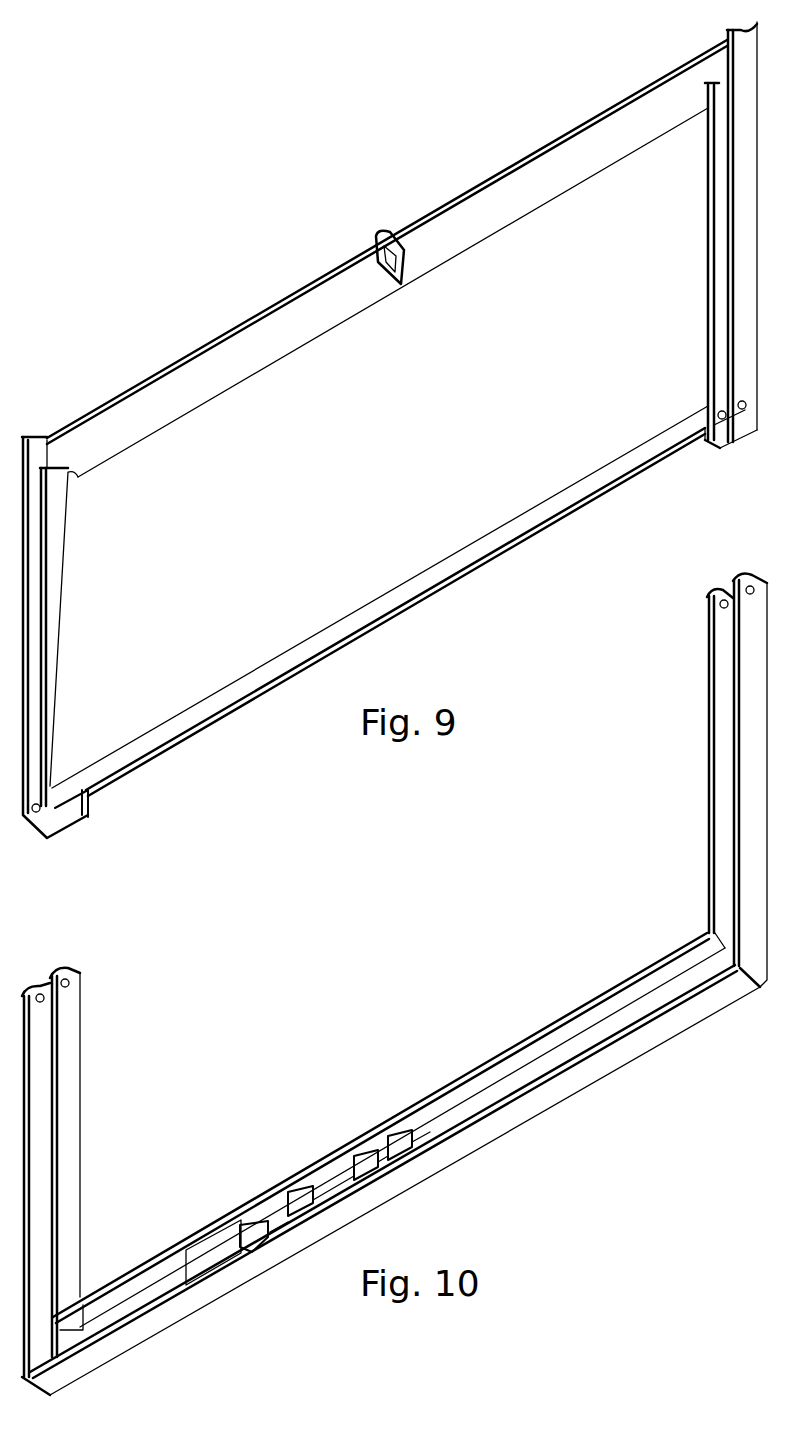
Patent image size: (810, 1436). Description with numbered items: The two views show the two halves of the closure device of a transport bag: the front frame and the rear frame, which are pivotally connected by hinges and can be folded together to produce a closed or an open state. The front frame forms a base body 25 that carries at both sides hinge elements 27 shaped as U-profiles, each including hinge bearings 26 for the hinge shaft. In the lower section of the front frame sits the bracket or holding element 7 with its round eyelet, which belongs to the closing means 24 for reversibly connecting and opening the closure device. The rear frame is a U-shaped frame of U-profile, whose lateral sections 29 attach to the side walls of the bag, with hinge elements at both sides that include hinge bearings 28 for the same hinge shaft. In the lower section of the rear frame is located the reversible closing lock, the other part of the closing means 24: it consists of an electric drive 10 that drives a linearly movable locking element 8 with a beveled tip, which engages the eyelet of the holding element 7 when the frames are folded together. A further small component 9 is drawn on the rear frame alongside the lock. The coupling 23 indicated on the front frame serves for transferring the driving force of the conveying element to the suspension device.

In FIG. 9, the holding element 7 is at (383, 236).
In FIG. 9, the coupling 23 is at (243, 283).
In FIG. 9, the base body 25 is at (213, 425).
In FIG. 9, the hinge bearings 26 is at (720, 400).
In FIG. 9, the hinge elements 27 is at (712, 218).
In FIG. 10, the closing means 24 is at (517, 1017).
In FIG. 10, the hinge bearings 28 is at (70, 974).
In FIG. 10, the lateral sections 29 is at (62, 1235).
In FIG. 10, the electric drive 10 is at (213, 1243).
In FIG. 10, the clip 9 is at (297, 1178).
In FIG. 10, the locking element 8 is at (330, 1178).